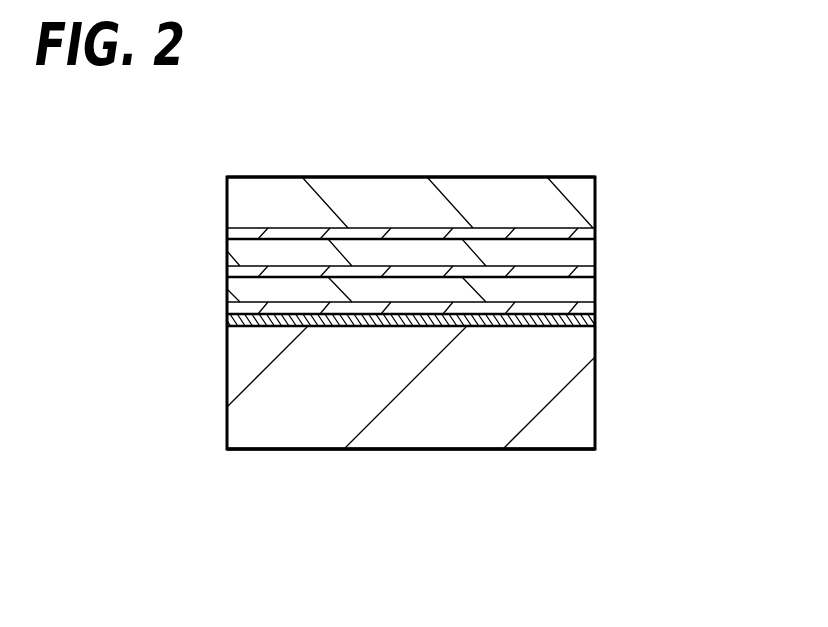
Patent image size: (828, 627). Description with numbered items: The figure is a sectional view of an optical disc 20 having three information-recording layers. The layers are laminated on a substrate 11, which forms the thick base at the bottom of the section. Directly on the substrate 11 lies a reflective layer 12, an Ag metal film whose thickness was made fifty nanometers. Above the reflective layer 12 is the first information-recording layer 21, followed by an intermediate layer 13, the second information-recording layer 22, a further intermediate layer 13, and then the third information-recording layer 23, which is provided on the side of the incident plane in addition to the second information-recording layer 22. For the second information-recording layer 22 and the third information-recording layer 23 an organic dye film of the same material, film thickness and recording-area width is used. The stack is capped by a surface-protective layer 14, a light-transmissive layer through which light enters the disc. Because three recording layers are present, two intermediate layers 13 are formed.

The optical disc 20 is at (548, 558).
The substrate 11 is at (590, 420).
The reflective layer 12 is at (590, 327).
The first information-recording layer 21 is at (590, 311).
The intermediate layer 13 is at (585, 248).
The second information-recording layer 22 is at (590, 269).
The third information-recording layer 23 is at (583, 236).
The surface-protective layer 14 is at (585, 200).